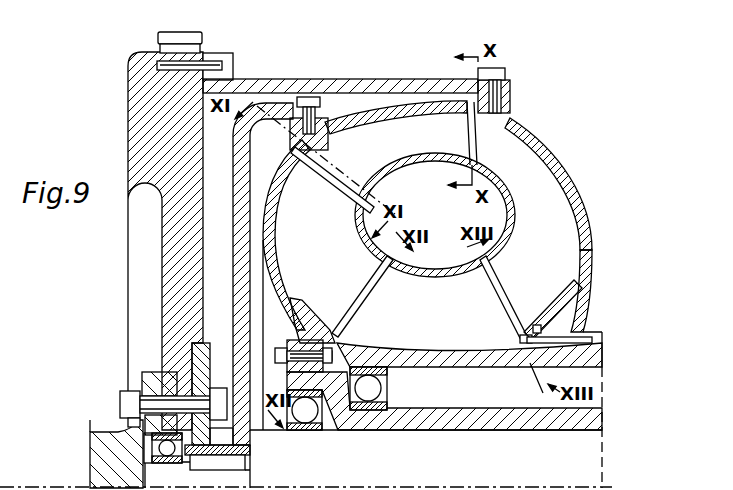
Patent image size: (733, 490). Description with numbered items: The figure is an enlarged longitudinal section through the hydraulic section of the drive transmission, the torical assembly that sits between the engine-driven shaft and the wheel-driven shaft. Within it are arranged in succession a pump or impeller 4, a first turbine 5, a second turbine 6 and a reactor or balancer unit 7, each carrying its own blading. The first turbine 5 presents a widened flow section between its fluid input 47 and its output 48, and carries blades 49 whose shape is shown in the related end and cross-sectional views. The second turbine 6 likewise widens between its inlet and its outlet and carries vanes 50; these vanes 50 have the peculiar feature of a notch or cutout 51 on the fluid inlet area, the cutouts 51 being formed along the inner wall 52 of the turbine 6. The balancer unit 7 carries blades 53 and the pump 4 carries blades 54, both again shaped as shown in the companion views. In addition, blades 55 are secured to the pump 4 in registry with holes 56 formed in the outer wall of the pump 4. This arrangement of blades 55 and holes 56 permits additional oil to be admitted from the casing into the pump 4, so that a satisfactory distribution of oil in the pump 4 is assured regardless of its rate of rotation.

The pump or impeller 4 is at (563, 203).
The first turbine 5 is at (421, 130).
The second turbine 6 is at (292, 207).
The reactor or balancer unit 7 is at (410, 335).
The fluid input 47 is at (467, 138).
The output 48 is at (332, 198).
The blades 49 is at (372, 130).
The vanes 50 is at (330, 300).
The notch or cutout 51 is at (332, 208).
The inner wall 52 is at (362, 243).
The blades 53 is at (473, 333).
The blades 54 is at (570, 250).
The blades 55 is at (557, 330).
The holes 56 is at (535, 325).